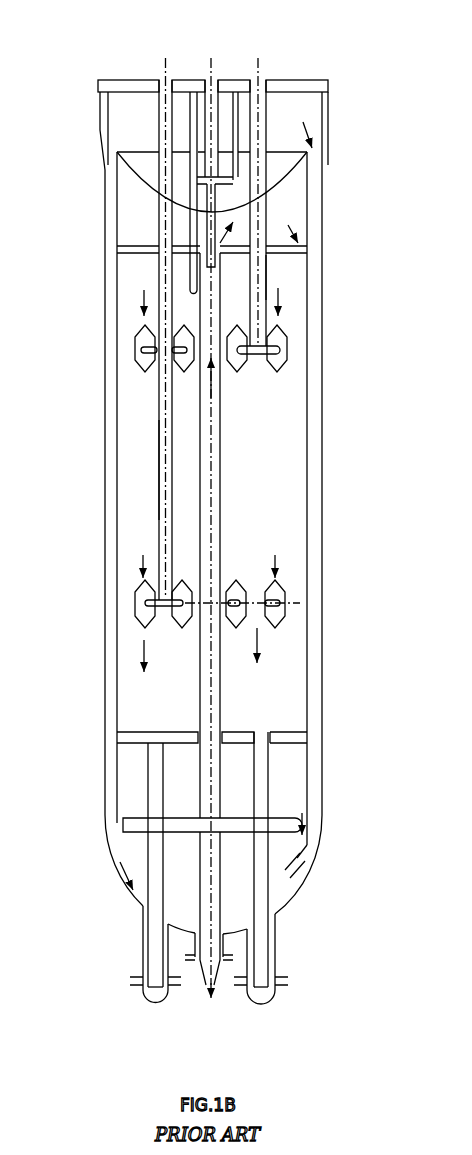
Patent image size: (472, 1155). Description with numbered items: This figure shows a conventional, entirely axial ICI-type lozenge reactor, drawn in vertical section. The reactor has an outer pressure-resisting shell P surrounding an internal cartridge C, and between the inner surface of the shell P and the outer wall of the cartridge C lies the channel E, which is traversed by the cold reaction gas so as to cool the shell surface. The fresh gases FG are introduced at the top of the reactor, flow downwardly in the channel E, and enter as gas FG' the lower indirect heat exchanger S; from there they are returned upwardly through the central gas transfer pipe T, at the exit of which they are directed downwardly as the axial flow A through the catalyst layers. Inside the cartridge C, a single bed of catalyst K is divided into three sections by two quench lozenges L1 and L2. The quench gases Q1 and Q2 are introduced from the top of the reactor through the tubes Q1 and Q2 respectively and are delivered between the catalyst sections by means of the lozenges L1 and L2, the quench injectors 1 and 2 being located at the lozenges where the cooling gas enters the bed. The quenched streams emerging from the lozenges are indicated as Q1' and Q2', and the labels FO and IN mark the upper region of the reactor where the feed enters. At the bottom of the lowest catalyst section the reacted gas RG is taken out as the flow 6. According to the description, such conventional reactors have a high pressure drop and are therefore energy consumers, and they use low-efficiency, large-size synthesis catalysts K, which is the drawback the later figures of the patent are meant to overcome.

The quench injector 1 is at (142, 352).
The quench injector 2 is at (150, 611).
The reacted gas output 6 is at (208, 1002).
The channel E is at (112, 278).
The outer pressure-resisting shell P is at (322, 392).
The fuel oil dome FO is at (313, 186).
The inlet plate IN is at (315, 220).
The quench gas tube Q2 is at (161, 305).
The second oxidant stream Q2' is at (88, 470).
The fresh synthesis gas FG is at (125, 152).
The quench gas tube Q1 is at (257, 178).
The first oxidant stream Q1' is at (313, 274).
The central gas transfer pipe T is at (210, 703).
The quench lozenge L1 is at (196, 352).
The quench lozenge L2 is at (159, 623).
The axial flow A is at (143, 303).
The catalyst K is at (262, 481).
The internal cartridge C is at (308, 529).
The gas entering heat exchanger FG' is at (155, 763).
The indirect heat exchanger S is at (285, 786).
The reacted gas RG is at (208, 883).